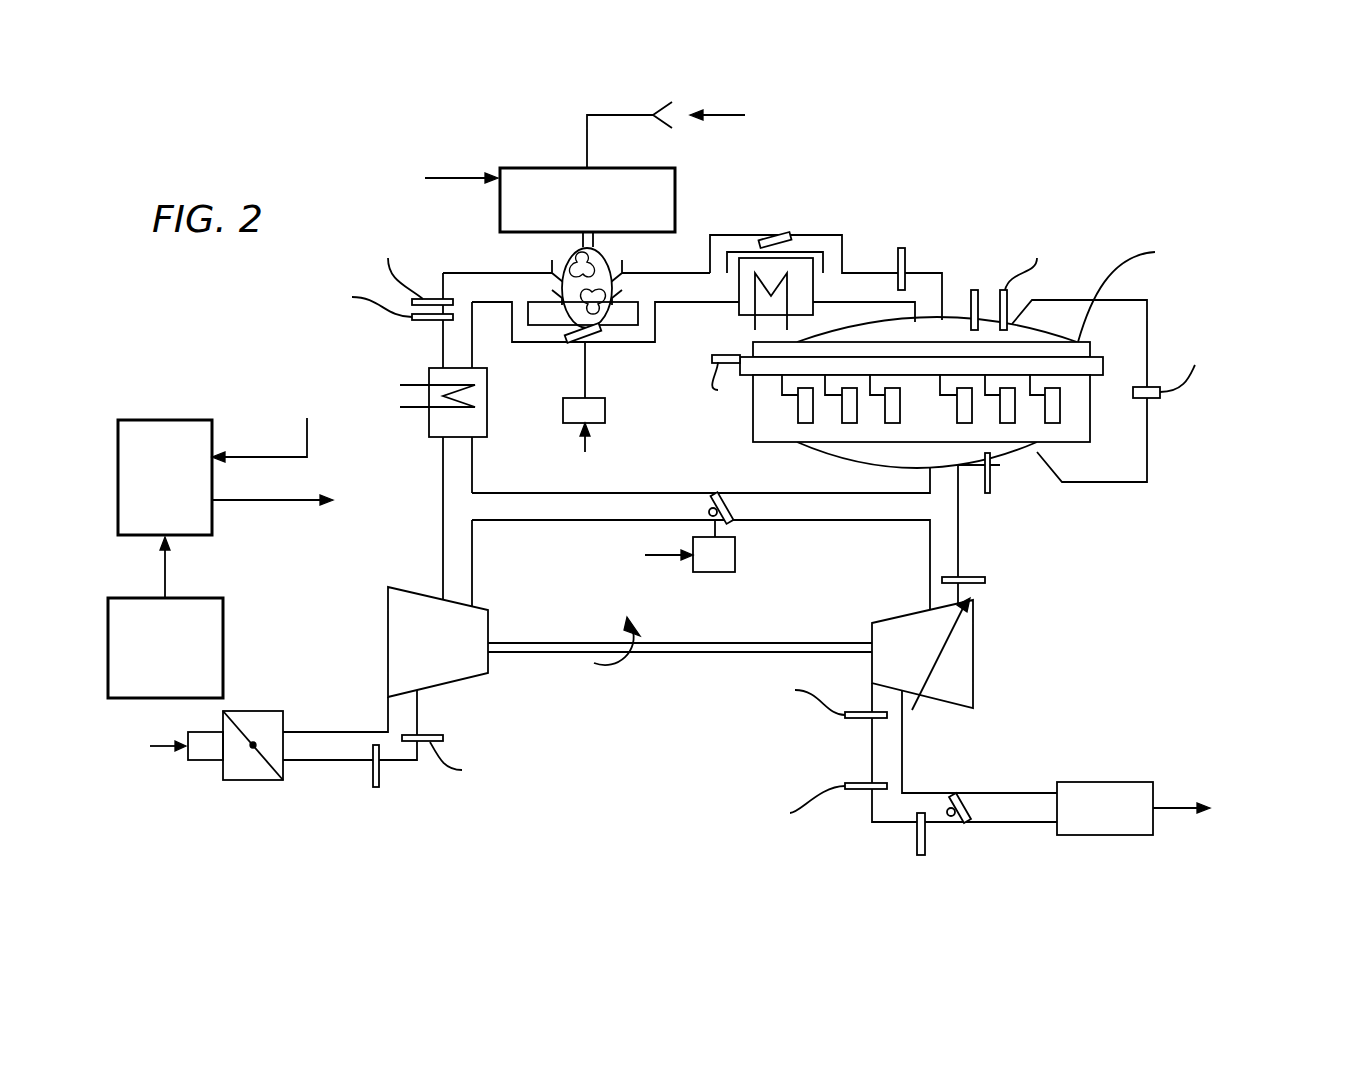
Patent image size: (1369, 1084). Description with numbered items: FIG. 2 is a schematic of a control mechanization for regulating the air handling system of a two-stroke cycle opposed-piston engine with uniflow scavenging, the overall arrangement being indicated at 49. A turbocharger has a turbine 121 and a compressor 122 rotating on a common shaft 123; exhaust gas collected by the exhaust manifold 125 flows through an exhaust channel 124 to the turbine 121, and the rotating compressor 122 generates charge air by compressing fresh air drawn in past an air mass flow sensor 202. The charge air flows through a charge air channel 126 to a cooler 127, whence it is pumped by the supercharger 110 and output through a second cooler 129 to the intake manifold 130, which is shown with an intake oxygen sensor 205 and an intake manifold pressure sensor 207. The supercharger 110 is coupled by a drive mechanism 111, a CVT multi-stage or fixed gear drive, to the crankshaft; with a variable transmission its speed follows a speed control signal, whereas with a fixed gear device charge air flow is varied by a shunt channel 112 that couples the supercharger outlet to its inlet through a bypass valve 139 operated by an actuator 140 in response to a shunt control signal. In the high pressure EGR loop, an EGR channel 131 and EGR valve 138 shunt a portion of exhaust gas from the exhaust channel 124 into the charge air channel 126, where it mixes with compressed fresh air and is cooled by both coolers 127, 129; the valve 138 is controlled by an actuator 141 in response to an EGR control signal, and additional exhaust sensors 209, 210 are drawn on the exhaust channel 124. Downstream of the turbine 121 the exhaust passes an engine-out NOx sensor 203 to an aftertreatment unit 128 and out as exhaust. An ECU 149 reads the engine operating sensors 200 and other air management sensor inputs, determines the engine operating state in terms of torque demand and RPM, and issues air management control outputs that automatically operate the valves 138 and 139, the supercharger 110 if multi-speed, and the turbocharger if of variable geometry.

The engine system 49 is at (1145, 188).
The supercharger 110 is at (610, 250).
The drive mechanism 111 is at (612, 168).
The shunt channel 112 is at (535, 343).
The turbine 121 is at (937, 690).
The compressor 122 is at (388, 645).
The common shaft 123 is at (740, 643).
The exhaust channel 124 is at (958, 520).
The exhaust manifold 125 is at (805, 450).
The charge air channel 126 is at (472, 540).
The cooler 127 is at (487, 405).
The aftertreatment system 128 is at (1043, 793).
The cooler 129 is at (739, 305).
The intake manifold 130 is at (1010, 325).
The EGR channel 131 is at (832, 522).
The EGR valve 138 is at (735, 503).
The bypass valve 139 is at (590, 340).
The actuator 140 is at (605, 418).
The actuator 141 is at (715, 572).
The ECU 149 is at (150, 420).
The engine sensors 200 is at (223, 645).
The air mass flow sensor 202 is at (376, 787).
The engine out NOx sensor 203 is at (917, 840).
The intake O2 sensor 205 is at (897, 265).
The intake manifold pressure sensor 207 is at (972, 300).
The exhaust sensor 209 is at (990, 486).
The exhaust sensor 210 is at (985, 580).